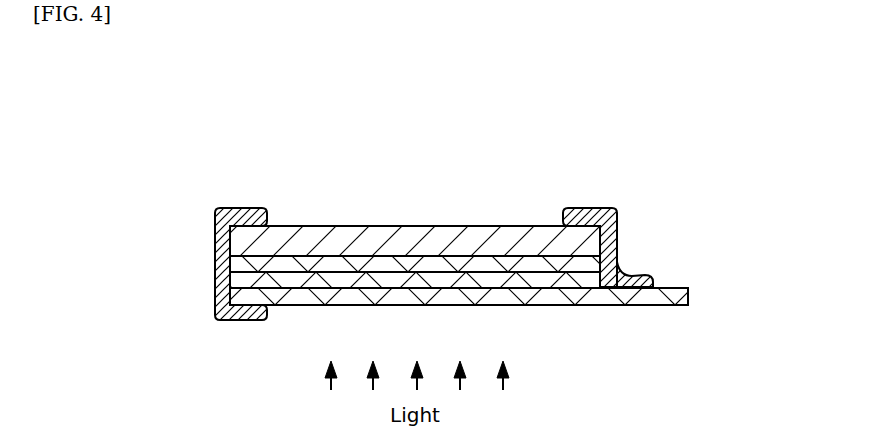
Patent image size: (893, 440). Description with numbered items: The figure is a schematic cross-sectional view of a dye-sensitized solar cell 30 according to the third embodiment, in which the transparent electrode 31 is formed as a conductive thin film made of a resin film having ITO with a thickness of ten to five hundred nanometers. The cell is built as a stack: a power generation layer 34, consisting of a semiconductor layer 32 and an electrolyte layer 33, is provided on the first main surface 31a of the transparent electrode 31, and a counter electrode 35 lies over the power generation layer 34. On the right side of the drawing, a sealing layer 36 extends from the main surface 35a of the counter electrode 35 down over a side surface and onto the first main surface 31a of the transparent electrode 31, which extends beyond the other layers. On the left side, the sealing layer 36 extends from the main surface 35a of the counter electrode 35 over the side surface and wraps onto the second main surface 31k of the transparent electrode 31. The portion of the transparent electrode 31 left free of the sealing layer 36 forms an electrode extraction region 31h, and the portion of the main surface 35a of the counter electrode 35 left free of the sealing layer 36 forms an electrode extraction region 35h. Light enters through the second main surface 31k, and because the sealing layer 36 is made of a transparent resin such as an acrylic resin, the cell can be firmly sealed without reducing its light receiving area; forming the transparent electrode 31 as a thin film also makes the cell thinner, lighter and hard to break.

The dye-sensitized solar cell 30 is at (121, 92).
The transparent electrode 31 is at (690, 300).
The first main surface 31a is at (688, 285).
The electrode extraction region 31h is at (665, 283).
The second main surface 31k is at (638, 306).
The semiconductor layer 32 is at (585, 279).
The electrolyte layer 33 is at (590, 262).
The power generation layer 34 is at (766, 190).
The counter electrode 35 is at (580, 240).
The main surface 35a is at (523, 225).
The electrode extraction region 35h is at (319, 200).
The sealing layer 36 is at (215, 222).